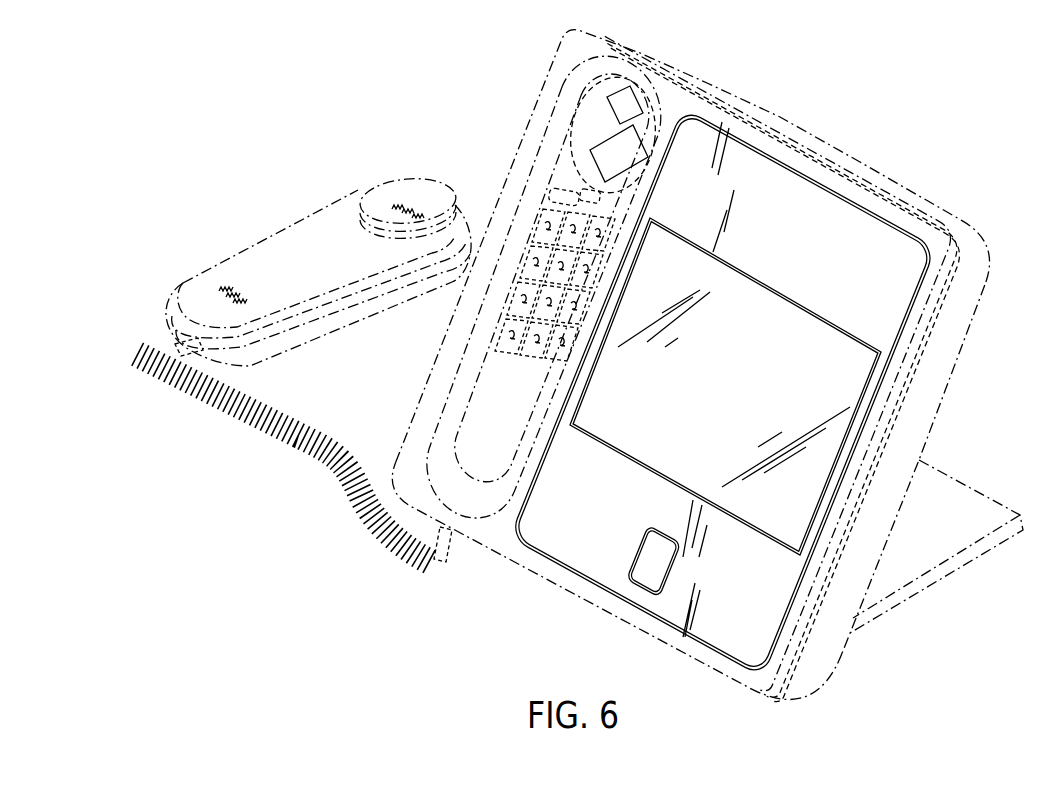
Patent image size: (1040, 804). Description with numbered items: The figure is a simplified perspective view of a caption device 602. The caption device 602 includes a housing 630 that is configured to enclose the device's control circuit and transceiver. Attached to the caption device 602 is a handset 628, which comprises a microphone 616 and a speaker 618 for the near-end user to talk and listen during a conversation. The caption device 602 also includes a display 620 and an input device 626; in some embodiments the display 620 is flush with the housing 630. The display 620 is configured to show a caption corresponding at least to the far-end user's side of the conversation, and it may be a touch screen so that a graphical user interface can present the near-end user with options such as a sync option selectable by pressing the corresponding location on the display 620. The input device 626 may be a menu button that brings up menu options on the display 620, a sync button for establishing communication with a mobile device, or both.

The caption device 602 is at (845, 84).
The microphone 616 is at (222, 284).
The speaker 618 is at (399, 203).
The display 620 is at (827, 330).
The input device 626 is at (503, 354).
The handset 628 is at (297, 213).
The housing 630 is at (958, 332).